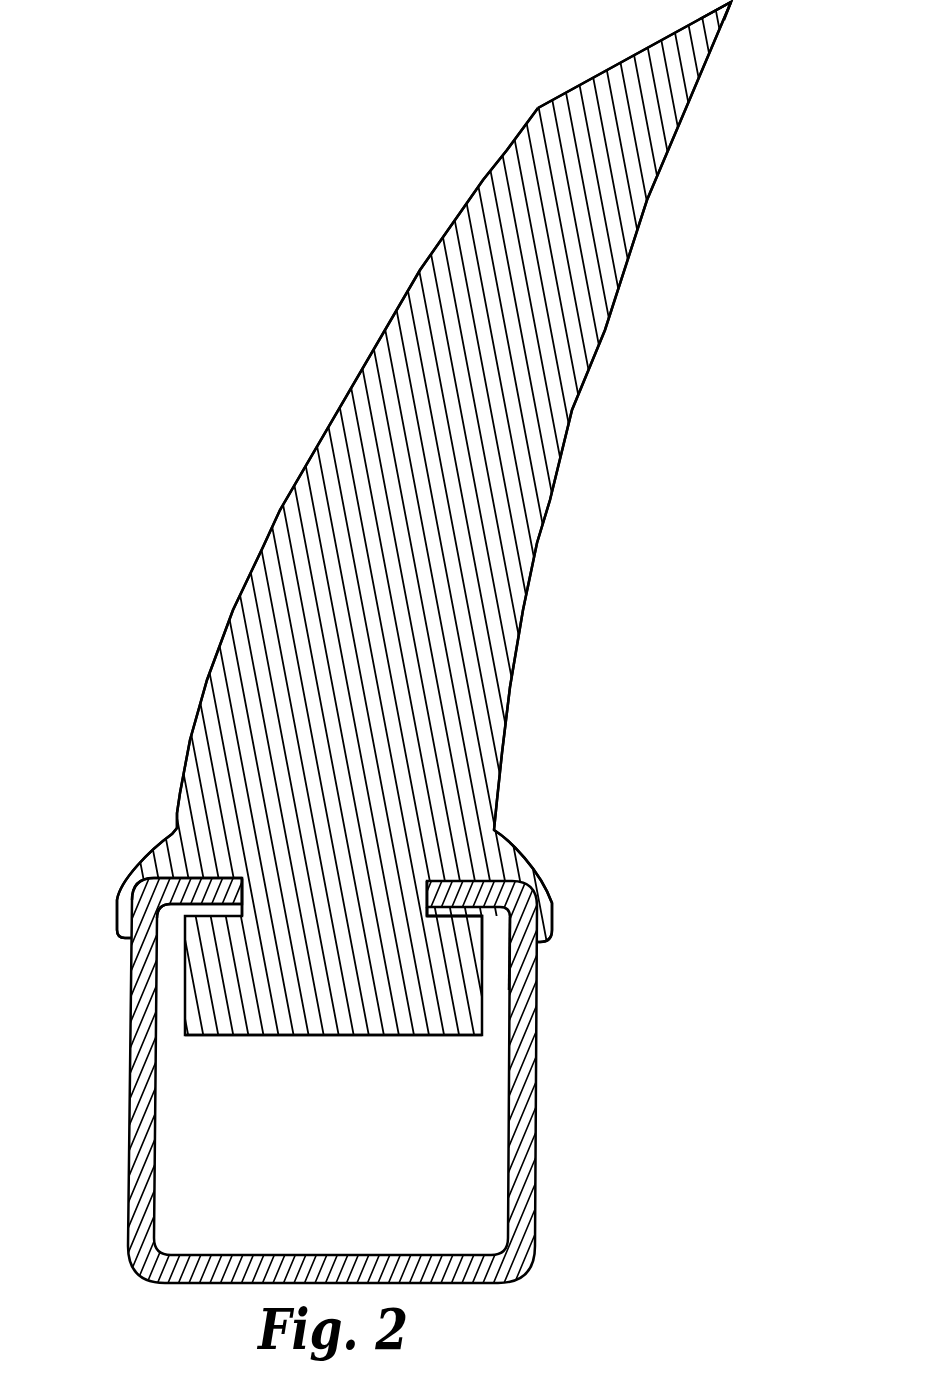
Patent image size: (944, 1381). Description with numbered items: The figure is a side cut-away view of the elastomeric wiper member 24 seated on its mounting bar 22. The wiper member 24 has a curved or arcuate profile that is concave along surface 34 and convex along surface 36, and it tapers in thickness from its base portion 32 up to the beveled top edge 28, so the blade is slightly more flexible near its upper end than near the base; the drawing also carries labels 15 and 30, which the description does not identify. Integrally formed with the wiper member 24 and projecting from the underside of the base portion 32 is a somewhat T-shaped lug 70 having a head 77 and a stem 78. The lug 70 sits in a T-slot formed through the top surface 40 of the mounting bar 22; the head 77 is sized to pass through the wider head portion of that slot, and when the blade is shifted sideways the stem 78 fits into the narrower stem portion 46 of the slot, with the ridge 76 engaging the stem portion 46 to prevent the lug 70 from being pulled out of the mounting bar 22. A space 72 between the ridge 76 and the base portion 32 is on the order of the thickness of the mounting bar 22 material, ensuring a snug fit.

The blade holder lip 15 is at (168, 907).
The mounting bar 22 is at (125, 1074).
The wiper member 24 is at (365, 714).
The beveled top edge 28 is at (622, 62).
The blade tip 30 is at (733, 3).
The base portion 32 is at (140, 862).
The concave surface 34 is at (508, 703).
The convex surface 36 is at (203, 697).
The top surface 40 is at (477, 877).
The stem portion 46 is at (413, 897).
The lug 70 is at (350, 986).
The space 72 is at (490, 918).
The ridge 76 is at (343, 903).
The head 77 is at (330, 1033).
The stem 78 is at (452, 910).